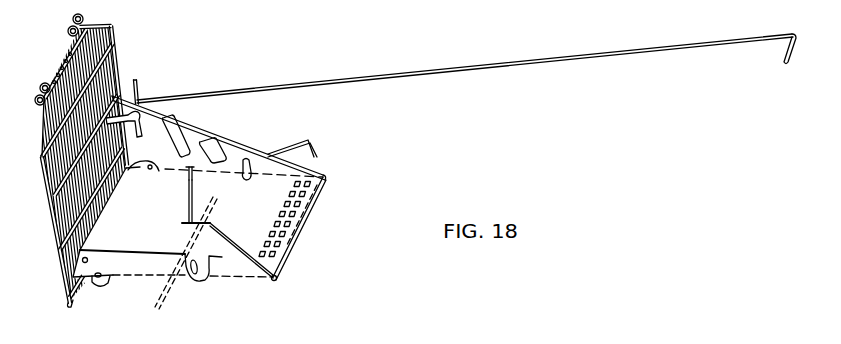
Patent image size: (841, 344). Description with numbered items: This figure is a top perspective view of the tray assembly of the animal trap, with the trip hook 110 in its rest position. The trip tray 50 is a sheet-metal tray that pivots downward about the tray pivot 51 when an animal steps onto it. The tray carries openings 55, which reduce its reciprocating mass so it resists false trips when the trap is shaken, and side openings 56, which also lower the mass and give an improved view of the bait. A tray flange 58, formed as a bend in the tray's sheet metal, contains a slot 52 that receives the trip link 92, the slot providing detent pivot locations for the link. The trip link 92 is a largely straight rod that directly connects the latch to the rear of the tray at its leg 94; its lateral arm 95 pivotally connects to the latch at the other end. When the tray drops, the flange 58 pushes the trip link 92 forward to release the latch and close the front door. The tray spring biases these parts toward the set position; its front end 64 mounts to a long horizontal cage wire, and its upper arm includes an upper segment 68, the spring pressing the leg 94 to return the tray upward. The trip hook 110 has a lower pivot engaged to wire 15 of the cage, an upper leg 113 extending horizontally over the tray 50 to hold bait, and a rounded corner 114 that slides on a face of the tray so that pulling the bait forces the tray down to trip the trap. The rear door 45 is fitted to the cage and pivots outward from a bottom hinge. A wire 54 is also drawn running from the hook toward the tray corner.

The wire 15 is at (163, 299).
The rear door 45 is at (62, 247).
The trip tray 50 is at (268, 210).
The tray pivot 51 is at (148, 172).
The slot 52 is at (152, 163).
The trip wire 54 is at (257, 247).
The openings 55 is at (303, 193).
The side openings 56 is at (217, 159).
The tray flange 58 is at (189, 134).
The front end of tray spring 64 is at (318, 152).
The upper segment 68 is at (137, 87).
The trip link 92 is at (329, 81).
The leg 94 is at (128, 110).
The lateral arm 95 is at (784, 56).
The trip hook 110 is at (188, 207).
The upper leg 113 is at (194, 180).
The corner 114 is at (190, 226).